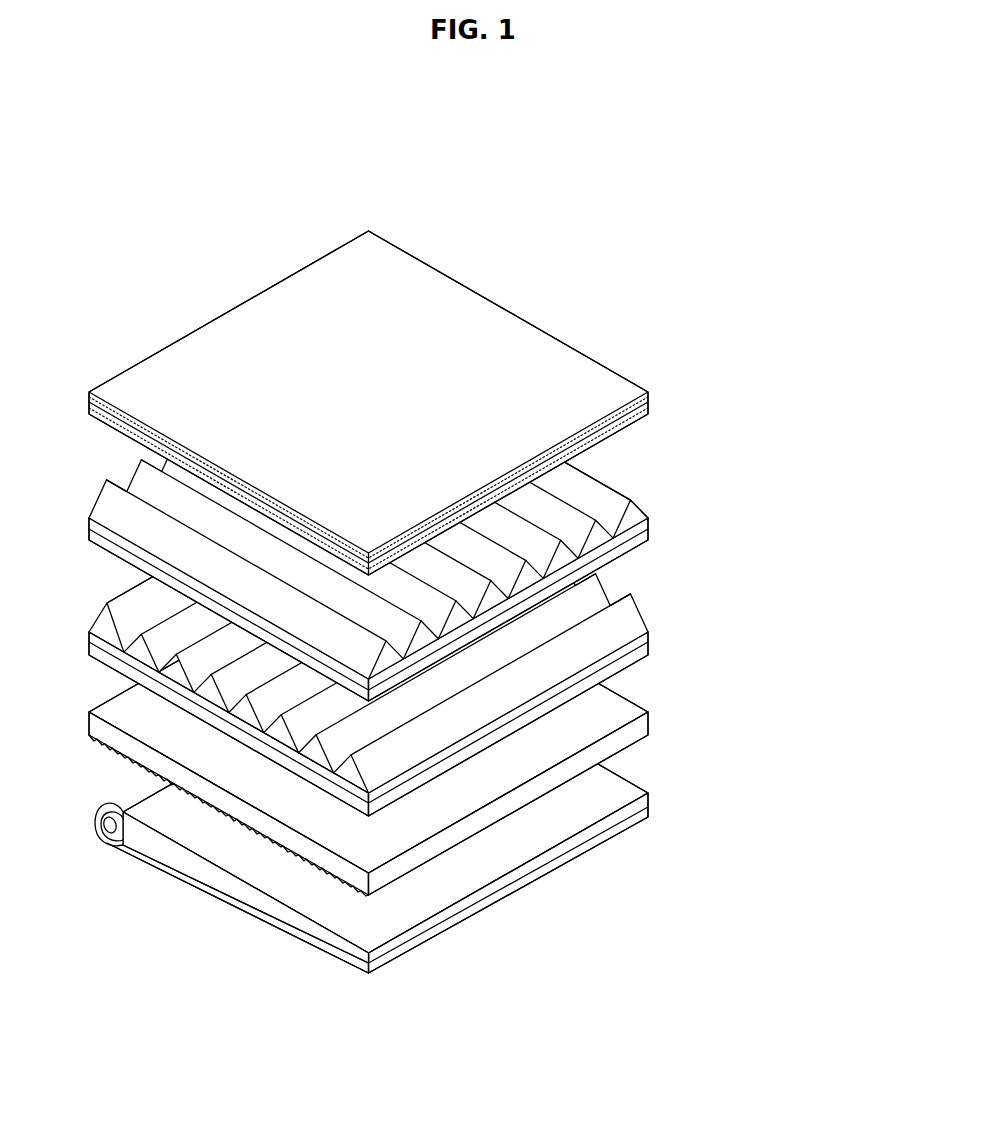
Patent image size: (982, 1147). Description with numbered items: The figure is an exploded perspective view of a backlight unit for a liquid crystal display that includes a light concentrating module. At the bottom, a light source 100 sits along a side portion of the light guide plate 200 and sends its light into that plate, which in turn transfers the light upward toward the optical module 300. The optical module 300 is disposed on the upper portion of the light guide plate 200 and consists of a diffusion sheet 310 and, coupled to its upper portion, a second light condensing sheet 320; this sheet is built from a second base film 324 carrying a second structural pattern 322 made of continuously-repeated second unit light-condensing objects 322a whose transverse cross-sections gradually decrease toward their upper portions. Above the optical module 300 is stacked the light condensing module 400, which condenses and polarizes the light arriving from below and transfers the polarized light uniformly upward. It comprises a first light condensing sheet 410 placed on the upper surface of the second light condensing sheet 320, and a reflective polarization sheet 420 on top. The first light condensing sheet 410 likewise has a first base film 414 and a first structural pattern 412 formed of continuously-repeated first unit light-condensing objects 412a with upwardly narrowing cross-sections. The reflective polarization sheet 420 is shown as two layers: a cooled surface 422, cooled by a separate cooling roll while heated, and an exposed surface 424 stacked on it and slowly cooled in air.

The light source 100 is at (112, 828).
The light guide plate 200 is at (626, 828).
The optical module 300 is at (469, 669).
The diffusion sheet 310 is at (640, 727).
The second light condensing sheet 320 is at (442, 629).
The second structural pattern 322 is at (418, 622).
The second unit light-condensing object 322a is at (618, 622).
The second base film 324 is at (632, 657).
The light condensing module 400 is at (469, 466).
The first light condensing sheet 410 is at (442, 520).
The first structural pattern 412 is at (417, 514).
The first unit light-condensing object 412a is at (603, 498).
The first base film 414 is at (635, 538).
The reflective polarization sheet 420 is at (442, 403).
The cooled surface 422 is at (648, 416).
The exposed surface 424 is at (600, 395).